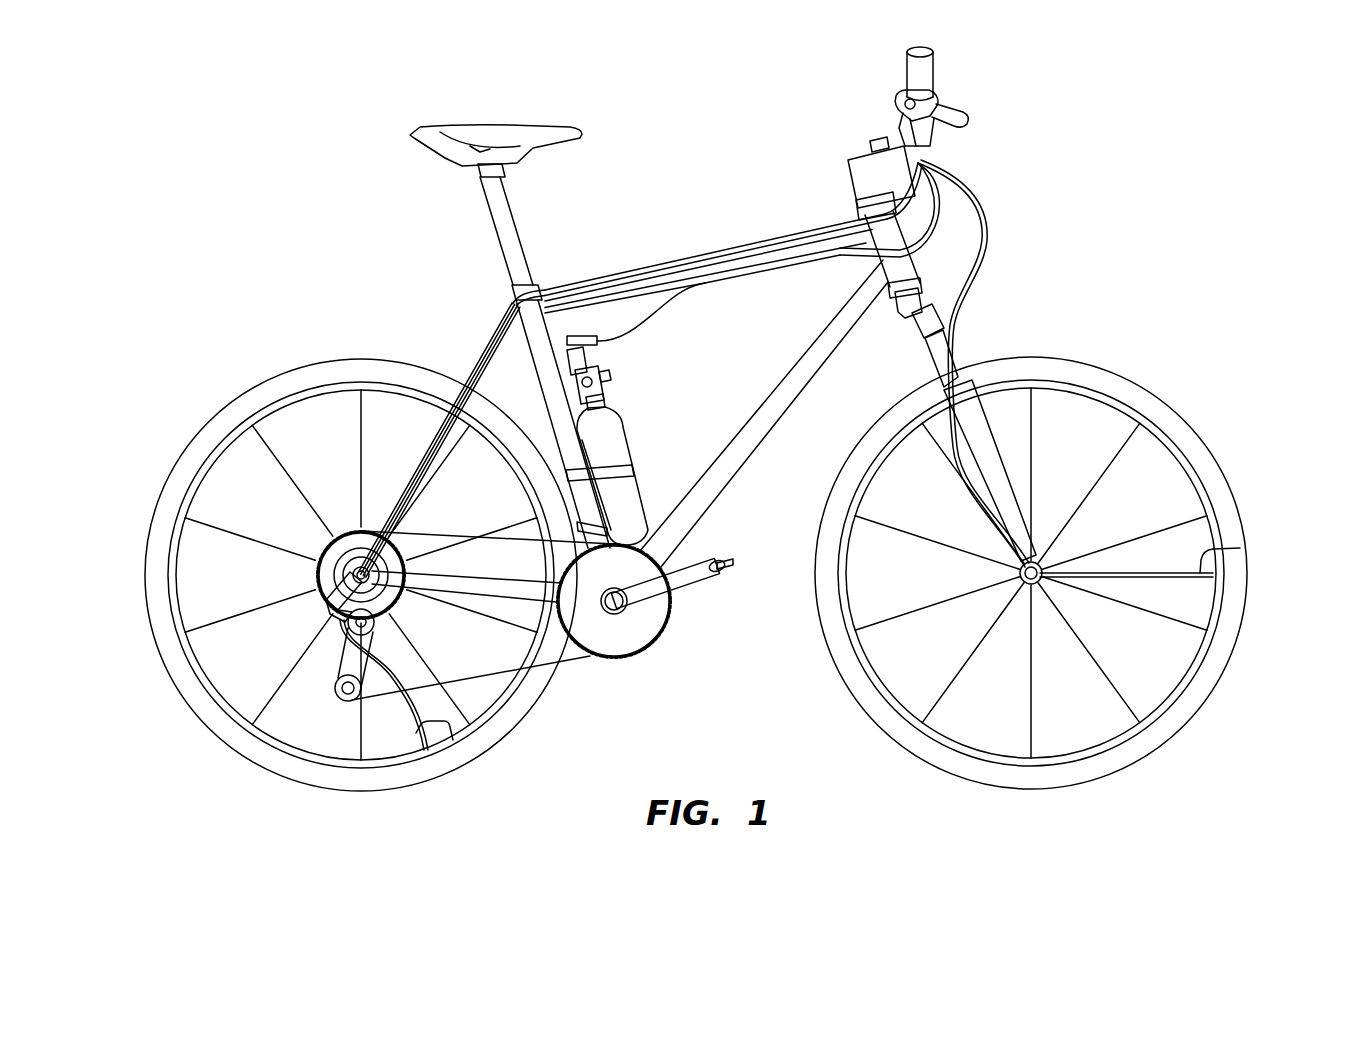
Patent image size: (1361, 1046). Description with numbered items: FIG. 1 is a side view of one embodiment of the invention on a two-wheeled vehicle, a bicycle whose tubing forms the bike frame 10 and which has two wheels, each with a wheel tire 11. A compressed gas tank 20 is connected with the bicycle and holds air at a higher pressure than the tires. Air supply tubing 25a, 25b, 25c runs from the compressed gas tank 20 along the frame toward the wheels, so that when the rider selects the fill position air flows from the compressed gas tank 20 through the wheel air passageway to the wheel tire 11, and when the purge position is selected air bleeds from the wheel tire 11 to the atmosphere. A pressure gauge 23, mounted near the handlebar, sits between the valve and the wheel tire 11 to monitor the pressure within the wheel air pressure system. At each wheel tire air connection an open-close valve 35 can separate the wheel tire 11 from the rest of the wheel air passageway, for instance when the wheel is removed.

The bike frame 10 is at (512, 290).
The wheel tire 11 is at (1187, 414).
The compressed gas tank 20 is at (621, 436).
The pressure gauge 23 is at (868, 143).
The air supply tubing 25a is at (610, 276).
The air supply tubing 25b is at (690, 283).
The air supply tubing 25c is at (985, 200).
The open-close valve 35 is at (453, 740).